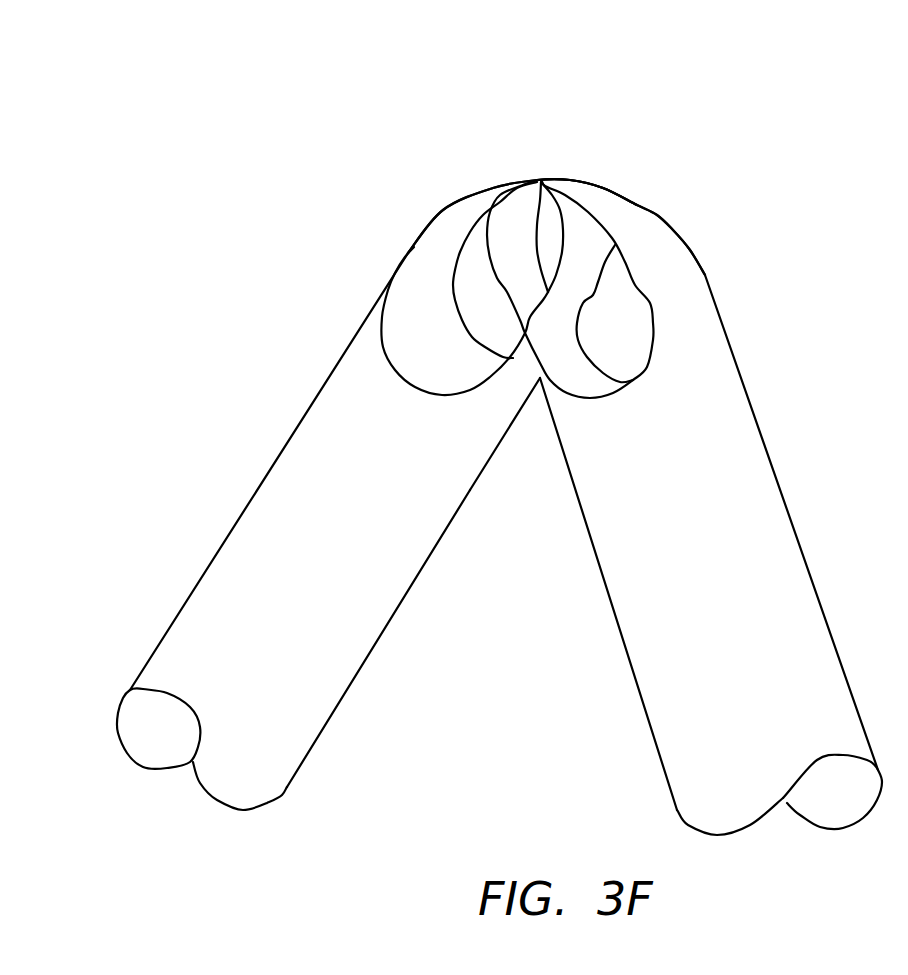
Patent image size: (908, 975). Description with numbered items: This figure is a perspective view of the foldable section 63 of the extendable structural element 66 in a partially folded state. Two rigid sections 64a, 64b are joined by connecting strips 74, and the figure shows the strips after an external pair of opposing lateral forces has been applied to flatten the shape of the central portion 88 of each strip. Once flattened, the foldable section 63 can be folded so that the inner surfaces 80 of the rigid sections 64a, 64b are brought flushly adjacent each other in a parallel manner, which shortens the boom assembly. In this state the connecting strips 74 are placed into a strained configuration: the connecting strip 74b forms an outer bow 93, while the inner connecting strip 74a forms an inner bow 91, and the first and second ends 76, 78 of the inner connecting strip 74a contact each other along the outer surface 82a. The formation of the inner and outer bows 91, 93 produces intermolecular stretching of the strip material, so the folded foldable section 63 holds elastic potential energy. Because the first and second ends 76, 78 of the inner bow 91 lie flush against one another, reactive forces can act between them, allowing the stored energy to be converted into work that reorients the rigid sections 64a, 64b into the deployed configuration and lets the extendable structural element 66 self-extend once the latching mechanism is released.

The extendable structural element 66 is at (193, 227).
The rigid section 64a is at (308, 408).
The rigid section 64b is at (728, 413).
The connecting strip 74 is at (560, 130).
The inner connecting strip 74a is at (510, 255).
The connecting strip 74b is at (627, 215).
The foldable section 63 is at (538, 180).
The central portion 88 is at (568, 180).
The outer bow 93 is at (605, 202).
The inner surface 80 is at (420, 269).
The outer surface 82a is at (509, 280).
The inner bow 91 is at (498, 257).
The first end 76 is at (518, 387).
The second end 78 is at (598, 405).